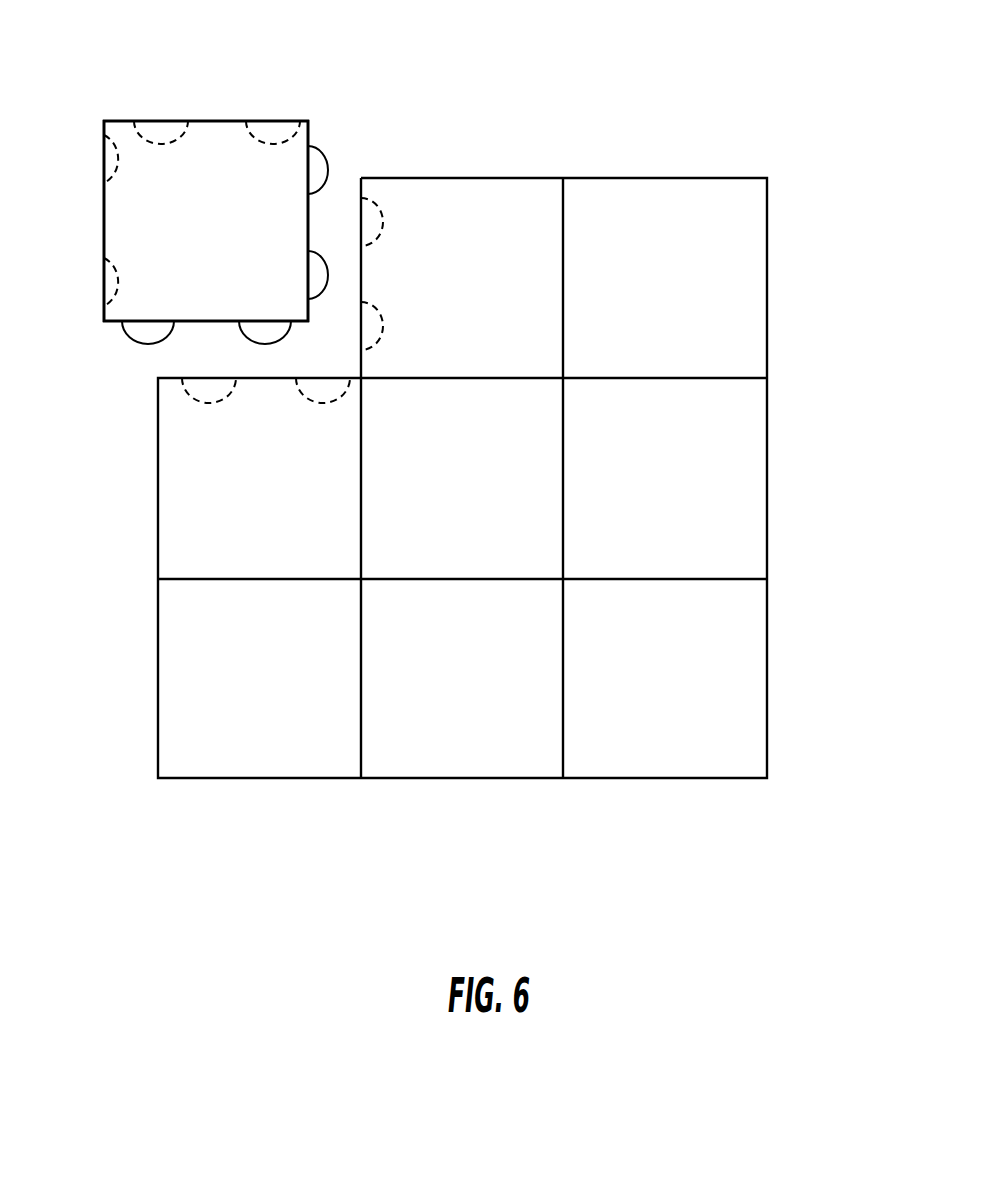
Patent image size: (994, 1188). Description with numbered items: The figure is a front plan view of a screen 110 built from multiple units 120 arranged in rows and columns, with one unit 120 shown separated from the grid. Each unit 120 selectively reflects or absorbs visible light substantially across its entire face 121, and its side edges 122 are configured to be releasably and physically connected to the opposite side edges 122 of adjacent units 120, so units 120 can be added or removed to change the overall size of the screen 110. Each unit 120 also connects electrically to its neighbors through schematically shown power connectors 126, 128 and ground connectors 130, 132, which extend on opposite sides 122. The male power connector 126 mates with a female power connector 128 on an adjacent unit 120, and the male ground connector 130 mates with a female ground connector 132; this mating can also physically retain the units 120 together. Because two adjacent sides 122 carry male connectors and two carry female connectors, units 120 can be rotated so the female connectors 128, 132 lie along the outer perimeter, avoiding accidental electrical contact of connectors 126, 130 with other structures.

The screen 110 is at (714, 124).
The unit 120 is at (239, 118).
The face 121 is at (171, 190).
The side edge 122 is at (216, 119).
The power connector 126 is at (327, 181).
The power connector 128 is at (118, 120).
The ground connector 130 is at (328, 277).
The ground connector 132 is at (197, 110).